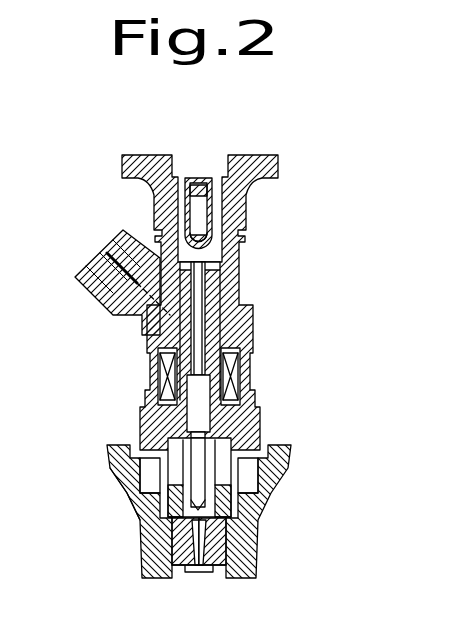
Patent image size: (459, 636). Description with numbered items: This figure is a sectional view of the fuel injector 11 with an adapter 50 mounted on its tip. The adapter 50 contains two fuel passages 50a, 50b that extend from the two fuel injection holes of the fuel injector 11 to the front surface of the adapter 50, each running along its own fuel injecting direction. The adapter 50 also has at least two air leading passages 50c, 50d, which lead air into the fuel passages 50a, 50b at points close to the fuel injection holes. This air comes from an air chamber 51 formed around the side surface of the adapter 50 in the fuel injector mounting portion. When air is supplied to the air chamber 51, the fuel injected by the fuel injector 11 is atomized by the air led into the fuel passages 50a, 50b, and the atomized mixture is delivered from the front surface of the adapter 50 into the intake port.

The fuel injector 11 is at (233, 280).
The adapter 50 is at (252, 553).
The fuel passage 50a is at (187, 563).
The fuel passage 50b is at (213, 568).
The air leading passage 50c is at (143, 550).
The air leading passage 50d is at (223, 517).
The air chamber 51 is at (162, 513).